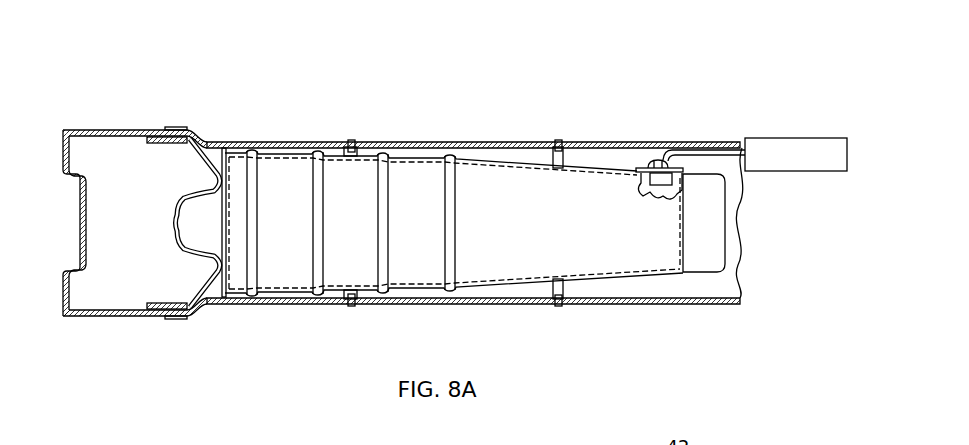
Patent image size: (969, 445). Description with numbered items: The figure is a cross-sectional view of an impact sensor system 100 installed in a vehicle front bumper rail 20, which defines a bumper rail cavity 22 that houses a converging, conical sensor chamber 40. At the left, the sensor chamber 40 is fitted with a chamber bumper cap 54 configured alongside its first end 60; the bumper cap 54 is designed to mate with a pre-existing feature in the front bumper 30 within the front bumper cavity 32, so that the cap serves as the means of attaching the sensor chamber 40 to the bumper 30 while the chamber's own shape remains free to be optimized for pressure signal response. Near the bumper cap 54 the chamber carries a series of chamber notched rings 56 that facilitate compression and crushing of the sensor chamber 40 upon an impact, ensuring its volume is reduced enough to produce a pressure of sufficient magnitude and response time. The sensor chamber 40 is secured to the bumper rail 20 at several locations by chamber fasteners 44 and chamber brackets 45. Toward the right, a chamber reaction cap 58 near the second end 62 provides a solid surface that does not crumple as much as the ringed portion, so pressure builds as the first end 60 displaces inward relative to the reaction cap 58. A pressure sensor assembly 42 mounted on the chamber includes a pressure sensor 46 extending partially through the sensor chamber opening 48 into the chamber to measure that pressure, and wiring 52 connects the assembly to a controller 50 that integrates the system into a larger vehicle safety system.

The impact sensor system 100 is at (451, 96).
The bumper rail 20 is at (620, 132).
The bumper rail cavity 22 is at (716, 282).
The front bumper 30 is at (165, 113).
The front bumper cavity 32 is at (88, 148).
The sensor chamber 40 is at (499, 203).
The pressure sensor assembly 42 is at (660, 167).
The chamber fasteners 44 is at (351, 140).
The chamber brackets 45 is at (344, 156).
The pressure sensor 46 is at (657, 194).
The sensor chamber opening 48 is at (678, 190).
The controller 50 is at (808, 138).
The wiring 52 is at (702, 155).
The chamber bumper cap 54 is at (200, 212).
The chamber notched rings 56 is at (317, 149).
The chamber reaction cap 58 is at (728, 196).
The first end 60 is at (224, 213).
The second end 62 is at (676, 212).